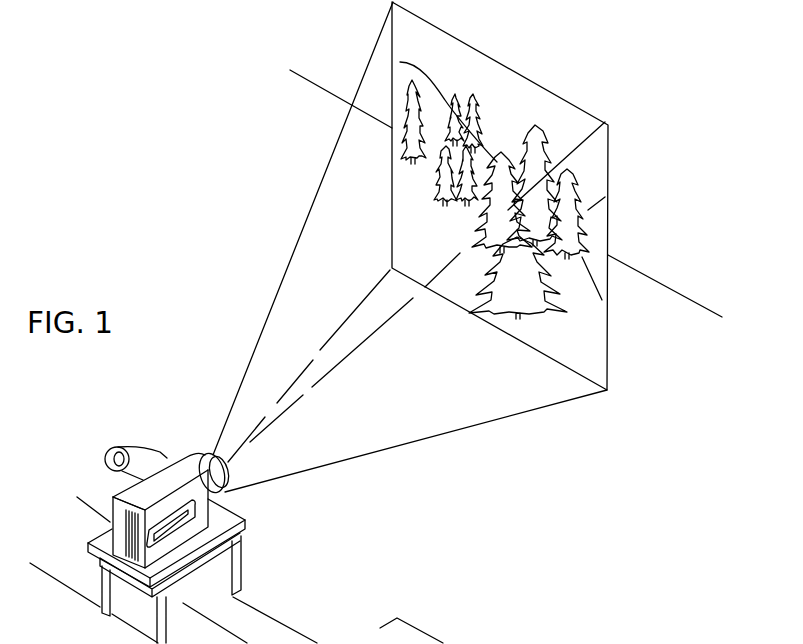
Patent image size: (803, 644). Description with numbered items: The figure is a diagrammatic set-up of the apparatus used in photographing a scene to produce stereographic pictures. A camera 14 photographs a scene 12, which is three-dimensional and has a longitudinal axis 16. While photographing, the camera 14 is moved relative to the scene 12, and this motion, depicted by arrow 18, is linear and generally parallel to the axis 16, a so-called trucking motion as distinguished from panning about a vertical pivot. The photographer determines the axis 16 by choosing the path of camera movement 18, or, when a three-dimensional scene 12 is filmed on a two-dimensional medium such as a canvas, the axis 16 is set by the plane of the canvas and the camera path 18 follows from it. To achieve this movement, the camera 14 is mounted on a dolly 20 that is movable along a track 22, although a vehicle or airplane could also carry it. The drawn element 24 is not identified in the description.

The scene 12 is at (590, 207).
The camera 14 is at (97, 475).
The longitudinal axis 16 is at (620, 257).
The arrow 18 is at (247, 562).
The dolly 20 is at (250, 520).
The track 22 is at (267, 610).
The cable 24 is at (522, 631).